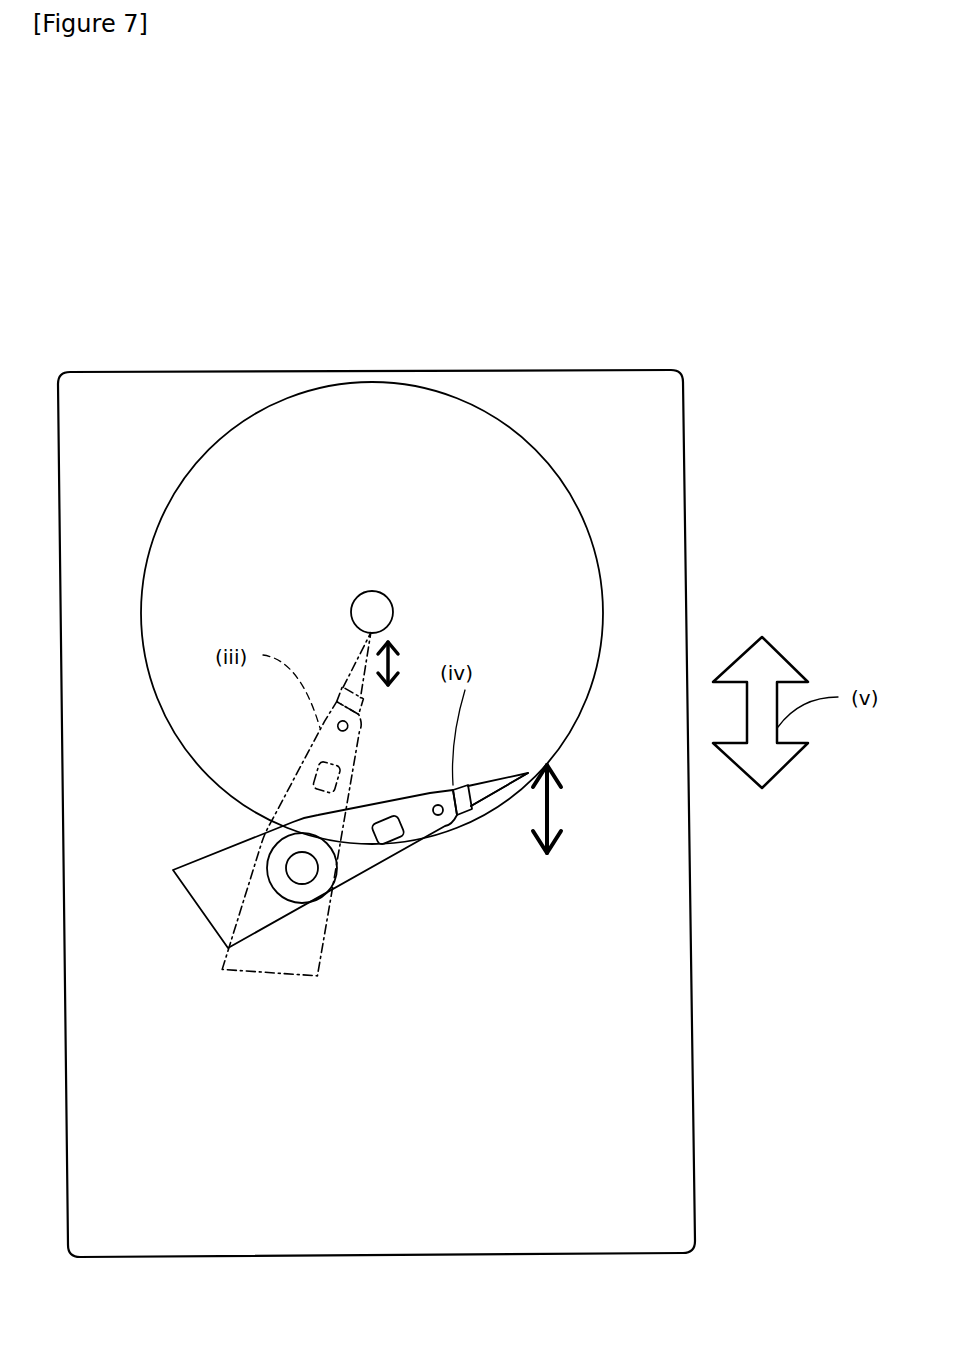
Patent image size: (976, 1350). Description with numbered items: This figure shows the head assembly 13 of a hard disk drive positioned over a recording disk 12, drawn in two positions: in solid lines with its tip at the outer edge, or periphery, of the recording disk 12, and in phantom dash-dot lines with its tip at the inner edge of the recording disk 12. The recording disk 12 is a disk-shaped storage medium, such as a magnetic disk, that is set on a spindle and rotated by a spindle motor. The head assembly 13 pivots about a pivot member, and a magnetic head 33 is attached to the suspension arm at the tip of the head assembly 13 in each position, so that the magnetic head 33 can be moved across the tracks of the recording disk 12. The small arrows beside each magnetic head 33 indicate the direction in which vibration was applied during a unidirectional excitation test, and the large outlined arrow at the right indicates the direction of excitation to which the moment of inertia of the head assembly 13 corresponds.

The recording disk 12 is at (525, 505).
The head assembly 13 is at (289, 795).
The magnetic head 33 is at (363, 672).